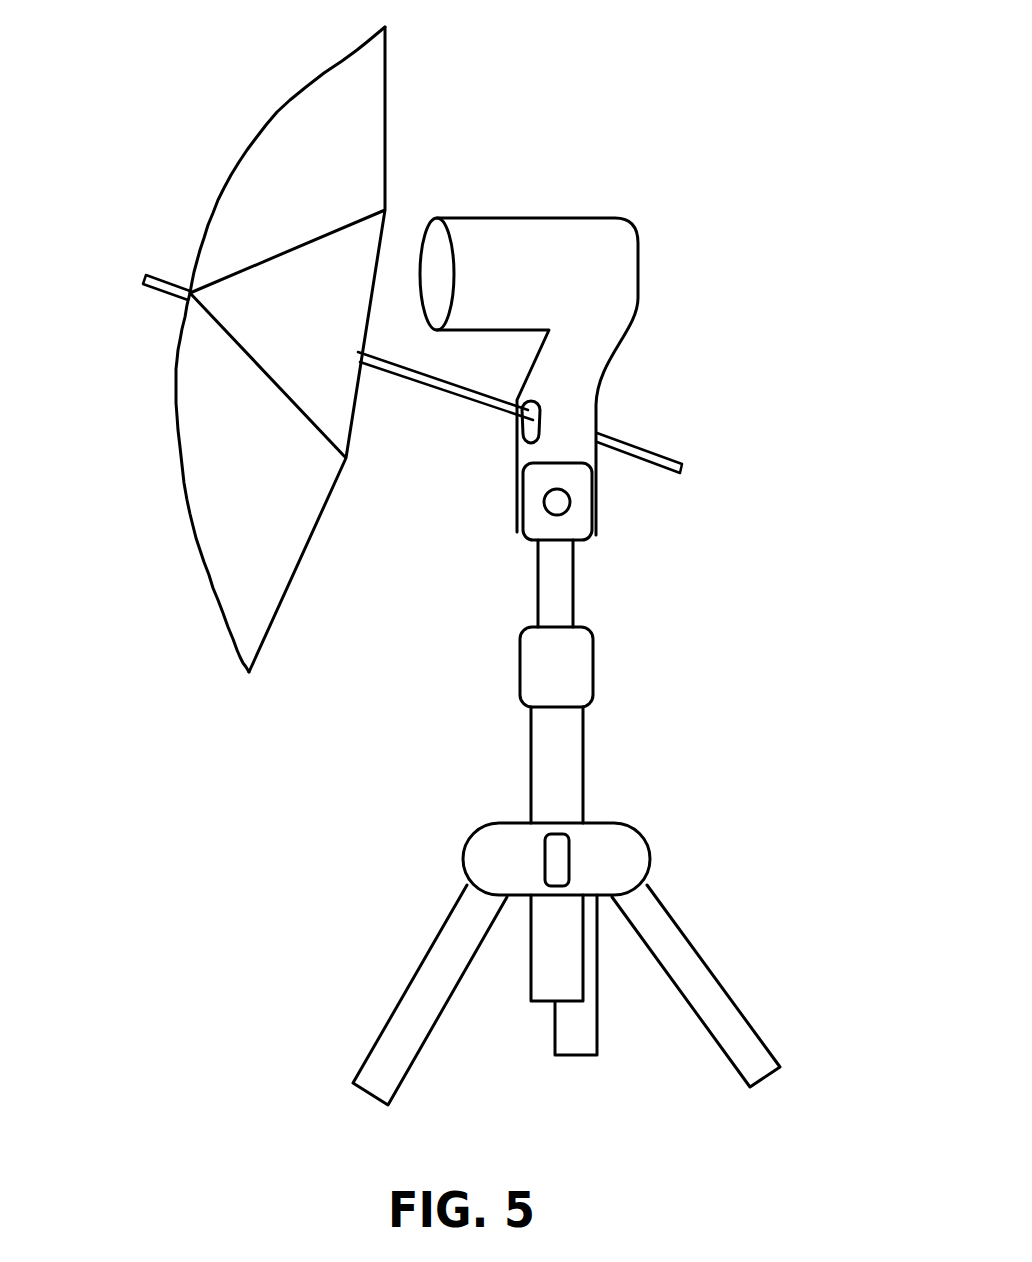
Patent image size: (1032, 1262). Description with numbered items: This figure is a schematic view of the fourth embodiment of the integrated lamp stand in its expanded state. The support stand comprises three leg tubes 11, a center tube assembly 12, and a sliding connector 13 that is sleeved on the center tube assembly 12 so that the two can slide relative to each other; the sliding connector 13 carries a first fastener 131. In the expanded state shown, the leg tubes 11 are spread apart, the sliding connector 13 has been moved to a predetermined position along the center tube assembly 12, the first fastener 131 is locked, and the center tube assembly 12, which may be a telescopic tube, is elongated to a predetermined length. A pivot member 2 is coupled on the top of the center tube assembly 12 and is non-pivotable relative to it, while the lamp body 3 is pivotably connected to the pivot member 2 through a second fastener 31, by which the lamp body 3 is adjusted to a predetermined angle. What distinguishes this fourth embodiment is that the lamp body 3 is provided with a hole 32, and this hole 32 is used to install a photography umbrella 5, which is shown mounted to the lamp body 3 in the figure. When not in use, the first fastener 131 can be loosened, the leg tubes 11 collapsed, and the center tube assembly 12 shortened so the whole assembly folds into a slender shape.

The photography umbrella 5 is at (177, 367).
The lamp body 3 is at (638, 290).
The hole 32 is at (540, 414).
The pivot member 2 is at (592, 503).
The second fastener 31 is at (566, 509).
The center tube assembly 12 is at (583, 734).
The sliding connector 13 is at (463, 858).
The first fastener 131 is at (564, 853).
The leg tubes 11 is at (722, 982).